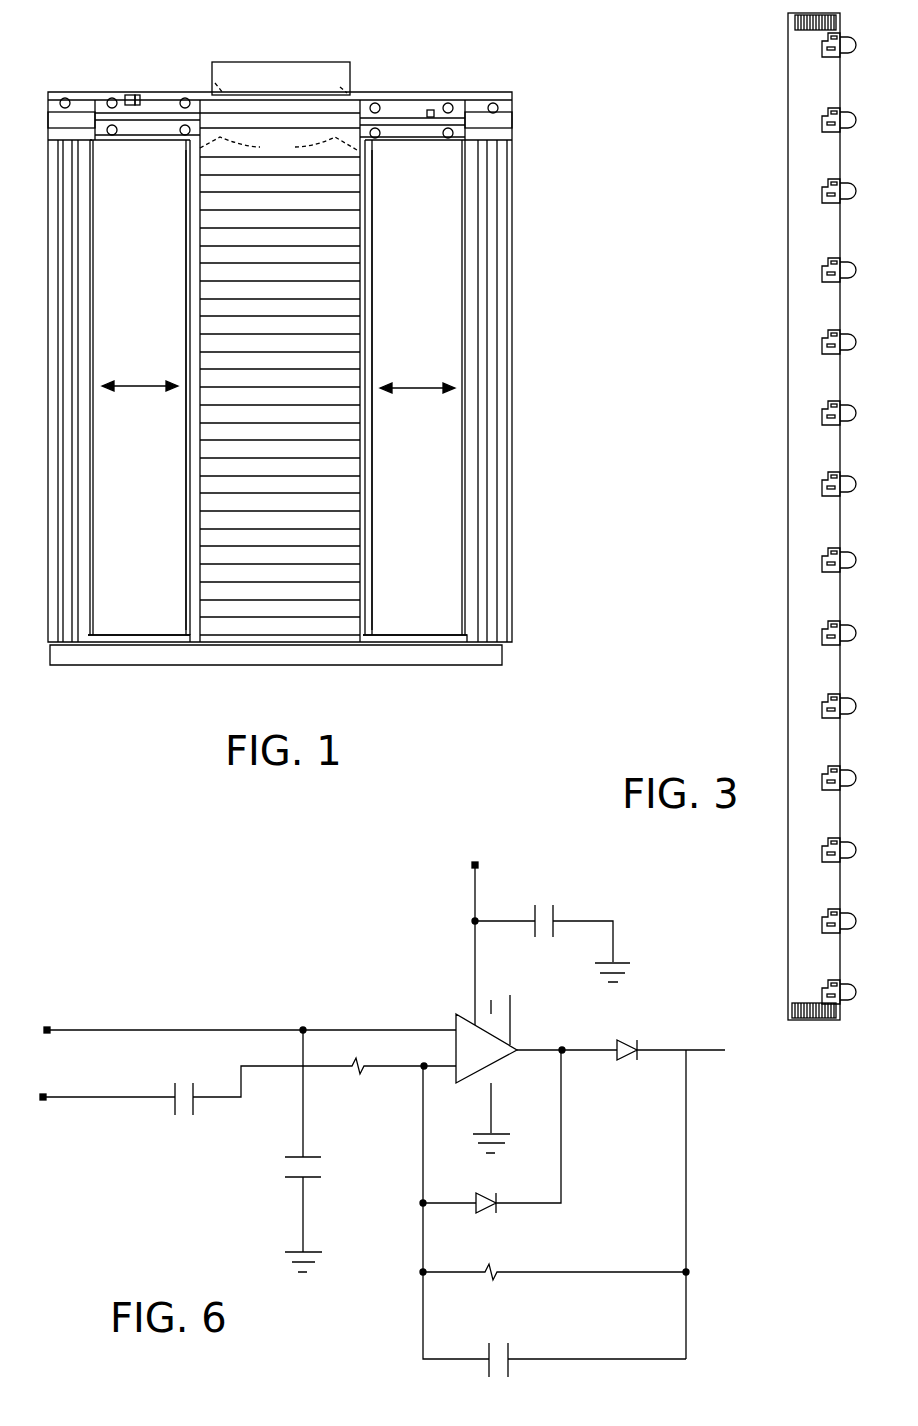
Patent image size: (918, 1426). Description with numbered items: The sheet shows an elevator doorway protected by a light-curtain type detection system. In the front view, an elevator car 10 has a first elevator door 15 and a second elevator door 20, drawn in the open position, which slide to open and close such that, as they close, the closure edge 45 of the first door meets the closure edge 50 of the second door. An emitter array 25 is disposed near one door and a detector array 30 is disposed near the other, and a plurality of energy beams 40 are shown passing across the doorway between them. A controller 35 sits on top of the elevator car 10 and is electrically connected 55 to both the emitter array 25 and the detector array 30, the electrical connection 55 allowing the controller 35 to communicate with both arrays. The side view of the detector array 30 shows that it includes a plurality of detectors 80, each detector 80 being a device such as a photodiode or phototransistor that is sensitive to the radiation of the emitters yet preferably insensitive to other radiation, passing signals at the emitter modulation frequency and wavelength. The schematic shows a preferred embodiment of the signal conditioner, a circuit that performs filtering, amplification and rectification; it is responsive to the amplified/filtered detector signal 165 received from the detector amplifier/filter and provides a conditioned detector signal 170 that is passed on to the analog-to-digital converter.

In FIG. 1, the elevator car 10 is at (512, 155).
In FIG. 1, the first elevator door 15 is at (151, 198).
In FIG. 1, the second elevator door 20 is at (425, 200).
In FIG. 1, the emitter array 25 is at (367, 287).
In FIG. 1, the detector array 30 is at (192, 302).
In FIG. 3, the detector array 30 is at (803, 118).
In FIG. 1, the controller 35 is at (285, 72).
In FIG. 1, the energy beams 40 is at (340, 476).
In FIG. 1, the closure edge of first door 45 is at (198, 625).
In FIG. 1, the closure edge of second door 50 is at (355, 628).
In FIG. 1, the electrical connection 55 is at (278, 144).
In FIG. 3, the detector 80 is at (860, 44).
In FIG. 6, the amplified/filtered detector signal 165 is at (120, 1098).
In FIG. 6, the conditioned detector signal 170 is at (697, 1052).